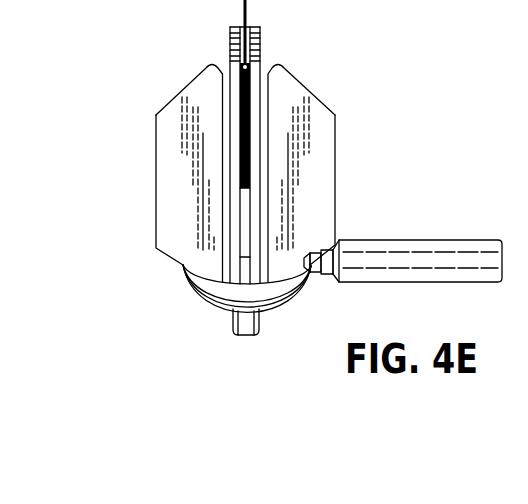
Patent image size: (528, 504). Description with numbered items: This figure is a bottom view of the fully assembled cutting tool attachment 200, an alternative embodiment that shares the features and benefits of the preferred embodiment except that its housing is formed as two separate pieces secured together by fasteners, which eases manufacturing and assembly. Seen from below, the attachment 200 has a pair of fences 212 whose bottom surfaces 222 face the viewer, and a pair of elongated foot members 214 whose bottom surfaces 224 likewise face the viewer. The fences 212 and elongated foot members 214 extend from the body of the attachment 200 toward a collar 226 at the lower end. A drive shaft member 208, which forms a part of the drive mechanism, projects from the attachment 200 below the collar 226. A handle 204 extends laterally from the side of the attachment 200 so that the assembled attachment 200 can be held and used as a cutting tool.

The cutting tool attachment 200 is at (286, 178).
The handle 204 is at (403, 238).
The drive shaft member 208 is at (234, 331).
The pair of fences 212 is at (157, 113).
The pair of elongated foot members 214 is at (230, 43).
The bottom surfaces of the pair of fences 222 is at (167, 166).
The bottom surfaces of the pair of elongated foot members 224 is at (257, 40).
The collar 226 is at (183, 282).